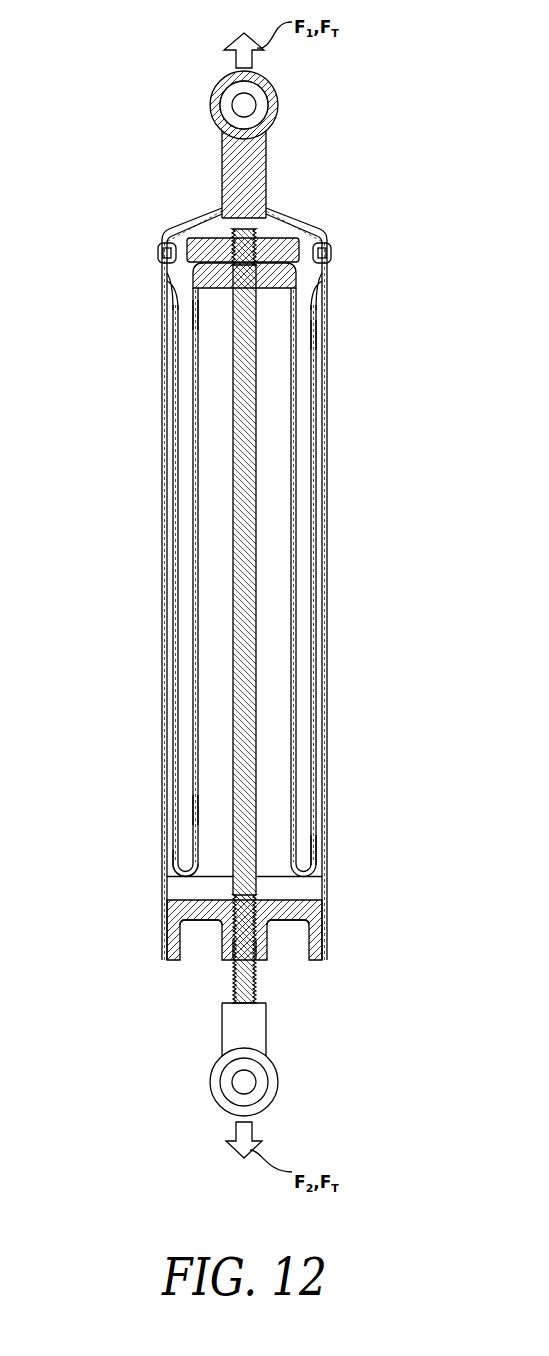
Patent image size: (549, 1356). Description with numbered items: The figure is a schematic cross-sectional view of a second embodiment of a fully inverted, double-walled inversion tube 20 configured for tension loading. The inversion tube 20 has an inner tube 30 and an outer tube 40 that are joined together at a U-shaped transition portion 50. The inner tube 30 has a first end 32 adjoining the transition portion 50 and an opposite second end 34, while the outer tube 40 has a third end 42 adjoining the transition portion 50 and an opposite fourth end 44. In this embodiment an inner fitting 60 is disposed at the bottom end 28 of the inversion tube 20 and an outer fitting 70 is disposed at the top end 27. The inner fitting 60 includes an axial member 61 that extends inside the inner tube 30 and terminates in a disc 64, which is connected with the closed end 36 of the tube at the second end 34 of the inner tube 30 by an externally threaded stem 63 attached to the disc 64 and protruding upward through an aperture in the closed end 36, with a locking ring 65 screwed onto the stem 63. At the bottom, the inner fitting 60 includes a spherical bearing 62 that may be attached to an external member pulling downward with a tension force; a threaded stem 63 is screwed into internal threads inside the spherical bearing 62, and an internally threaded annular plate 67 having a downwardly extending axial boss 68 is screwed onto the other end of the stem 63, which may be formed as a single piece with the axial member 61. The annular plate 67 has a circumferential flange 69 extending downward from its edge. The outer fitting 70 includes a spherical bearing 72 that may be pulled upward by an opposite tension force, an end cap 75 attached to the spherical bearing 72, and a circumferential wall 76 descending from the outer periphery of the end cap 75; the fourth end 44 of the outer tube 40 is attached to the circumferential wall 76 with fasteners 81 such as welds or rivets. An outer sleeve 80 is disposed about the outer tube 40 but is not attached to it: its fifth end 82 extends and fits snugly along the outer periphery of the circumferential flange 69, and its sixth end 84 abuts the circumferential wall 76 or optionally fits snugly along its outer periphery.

The double-walled inversion tube 20 is at (120, 216).
The top end 27 is at (346, 410).
The bottom end 28 is at (345, 789).
The inner tube 30 is at (193, 523).
The first end 32 is at (194, 810).
The second end 34 is at (196, 312).
The closed end 36 is at (218, 305).
The outer tube 40 is at (177, 570).
The third end 42 is at (313, 850).
The fourth end 44 is at (318, 298).
The U-shaped transition portion 50 is at (175, 862).
The inner fitting 60 is at (247, 1059).
The axial member 61 is at (243, 637).
The spherical bearing 62 is at (210, 1082).
The externally threaded stem 63 is at (231, 229).
The disc 64 is at (159, 257).
The locking ring 65 is at (289, 246).
The annular plate 67 is at (205, 922).
The axial boss 68 is at (262, 957).
The circumferential flange 69 is at (318, 952).
The outer fitting 70 is at (278, 137).
The spherical bearing 72 is at (213, 104).
The end cap 75 is at (226, 236).
The circumferential wall 76 is at (331, 266).
The outer sleeve 80 is at (163, 668).
The fasteners 81 is at (333, 252).
The fifth end 82 is at (162, 876).
The sixth end 84 is at (165, 300).